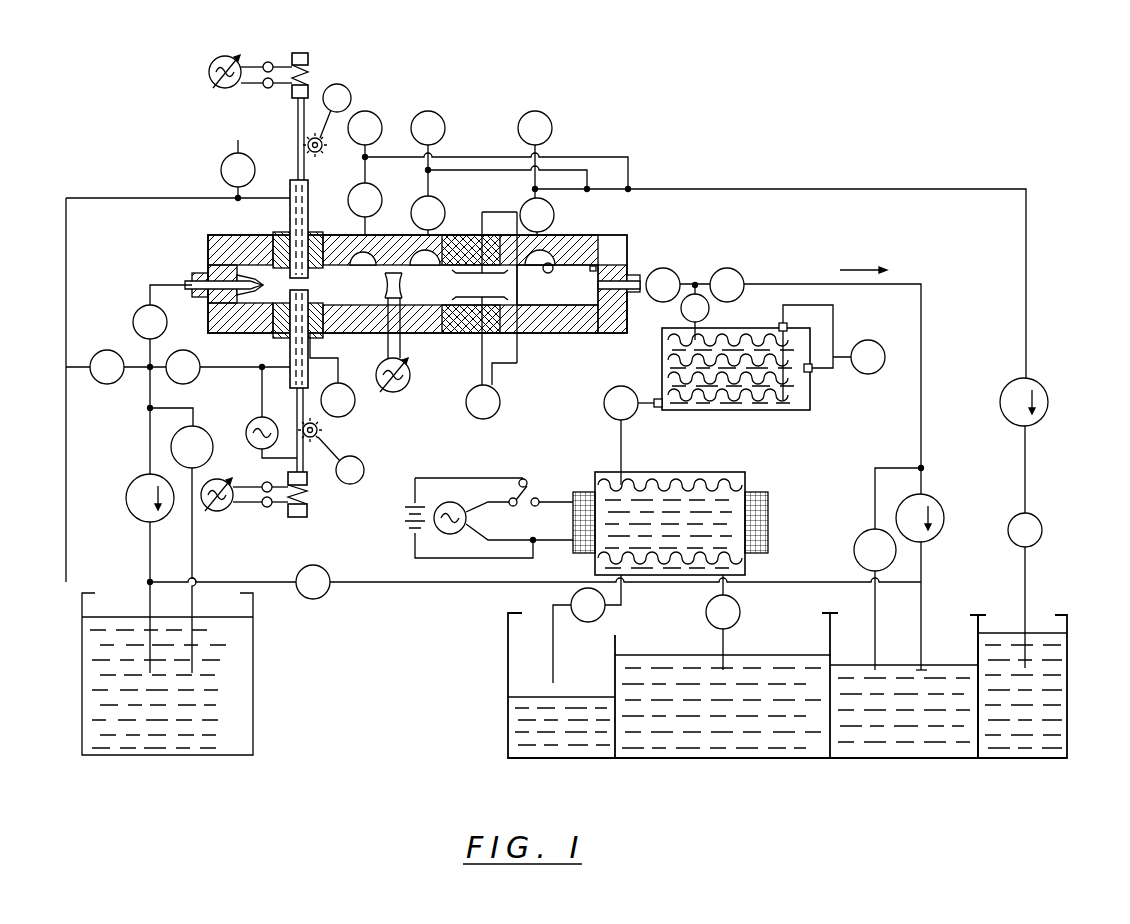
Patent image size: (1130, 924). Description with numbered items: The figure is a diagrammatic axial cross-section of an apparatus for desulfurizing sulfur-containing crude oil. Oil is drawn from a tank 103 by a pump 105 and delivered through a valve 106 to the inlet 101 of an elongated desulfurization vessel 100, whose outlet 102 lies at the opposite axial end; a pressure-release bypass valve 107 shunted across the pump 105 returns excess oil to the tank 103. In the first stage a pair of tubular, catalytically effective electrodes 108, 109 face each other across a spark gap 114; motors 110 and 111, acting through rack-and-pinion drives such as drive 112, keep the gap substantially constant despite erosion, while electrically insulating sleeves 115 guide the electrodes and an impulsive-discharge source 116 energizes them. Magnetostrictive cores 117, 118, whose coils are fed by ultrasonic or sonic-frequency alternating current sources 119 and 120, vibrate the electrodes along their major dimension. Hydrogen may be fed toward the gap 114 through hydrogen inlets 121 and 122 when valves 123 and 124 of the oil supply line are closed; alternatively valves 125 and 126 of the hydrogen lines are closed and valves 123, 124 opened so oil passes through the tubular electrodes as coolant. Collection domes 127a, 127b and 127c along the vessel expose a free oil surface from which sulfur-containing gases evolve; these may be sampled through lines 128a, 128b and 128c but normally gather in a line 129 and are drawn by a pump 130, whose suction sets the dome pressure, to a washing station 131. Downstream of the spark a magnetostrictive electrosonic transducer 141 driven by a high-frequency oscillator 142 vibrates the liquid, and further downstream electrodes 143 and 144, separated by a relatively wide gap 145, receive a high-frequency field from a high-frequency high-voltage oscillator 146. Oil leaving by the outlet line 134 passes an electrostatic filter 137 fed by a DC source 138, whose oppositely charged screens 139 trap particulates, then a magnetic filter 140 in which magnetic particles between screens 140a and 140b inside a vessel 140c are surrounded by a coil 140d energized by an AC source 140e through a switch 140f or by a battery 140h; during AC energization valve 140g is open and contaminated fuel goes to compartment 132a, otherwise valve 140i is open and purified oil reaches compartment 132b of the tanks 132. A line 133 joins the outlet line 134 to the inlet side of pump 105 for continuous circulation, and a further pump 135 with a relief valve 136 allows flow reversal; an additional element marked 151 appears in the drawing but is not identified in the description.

The desulfurization vessel 100 is at (491, 263).
The inlet 101 is at (190, 298).
The outlet 102 is at (645, 275).
The tank 103 is at (250, 712).
The pump 105 is at (126, 508).
The valve 106 is at (133, 333).
The pressure-release bypass valve 107 is at (245, 440).
The electrode 108 is at (312, 230).
The electrode 109 is at (290, 358).
The motor 110 is at (351, 93).
The motor 111 is at (365, 465).
The rack-and-pinion drive 112 is at (312, 130).
The gap 114 is at (270, 240).
The electrically insulating sleeves 115 is at (385, 295).
The impulsive-discharge source 116 is at (358, 422).
The magnetostrictive core 117 is at (308, 57).
The magnetostrictive core 118 is at (307, 512).
The alternating current source 119 is at (210, 62).
The alternating current source 120 is at (215, 512).
The hydrogen inlet 121 is at (238, 145).
The hydrogen inlet 122 is at (305, 470).
The valve 123 is at (107, 385).
The valve 124 is at (180, 385).
The valve 125 is at (220, 170).
The valve 126 is at (255, 398).
The collection dome 127a is at (382, 225).
The collection dome 127b is at (440, 240).
The collection dome 127c is at (562, 250).
The line 128a is at (380, 135).
The line 128b is at (446, 130).
The line 128c is at (553, 145).
The line 129 is at (880, 189).
The pump 130 is at (1049, 402).
The washing station 131 is at (1068, 692).
The tanks 132 is at (722, 763).
The compartment 132a is at (580, 745).
The compartment 132b is at (815, 762).
The line 133 is at (410, 588).
The outlet line 134 is at (930, 284).
The further pump 135 is at (942, 504).
The relief valve 136 is at (855, 548).
The electrostatic filter 137 is at (740, 328).
The source 138 is at (885, 357).
The oppositely charged screens 139 is at (662, 365).
The magnetic filter 140 is at (745, 478).
The screen 140a is at (750, 488).
The screen 140b is at (745, 568).
The vessel 140c is at (600, 472).
The magnetic coil 140d is at (768, 522).
The AC source 140e is at (466, 518).
The switch 140f is at (535, 490).
The valve 140g is at (600, 612).
The battery 140h is at (410, 532).
The valve 140i is at (740, 606).
The magnetostrictive electrosonic transducer 141 is at (452, 275).
The high-frequency oscillator 142 is at (404, 390).
The electrode 143 is at (545, 245).
The electrode 144 is at (457, 337).
The gap 145 is at (483, 288).
The high-frequency high-voltage oscillator 146 is at (500, 410).
The outlet body portion 151 is at (612, 242).